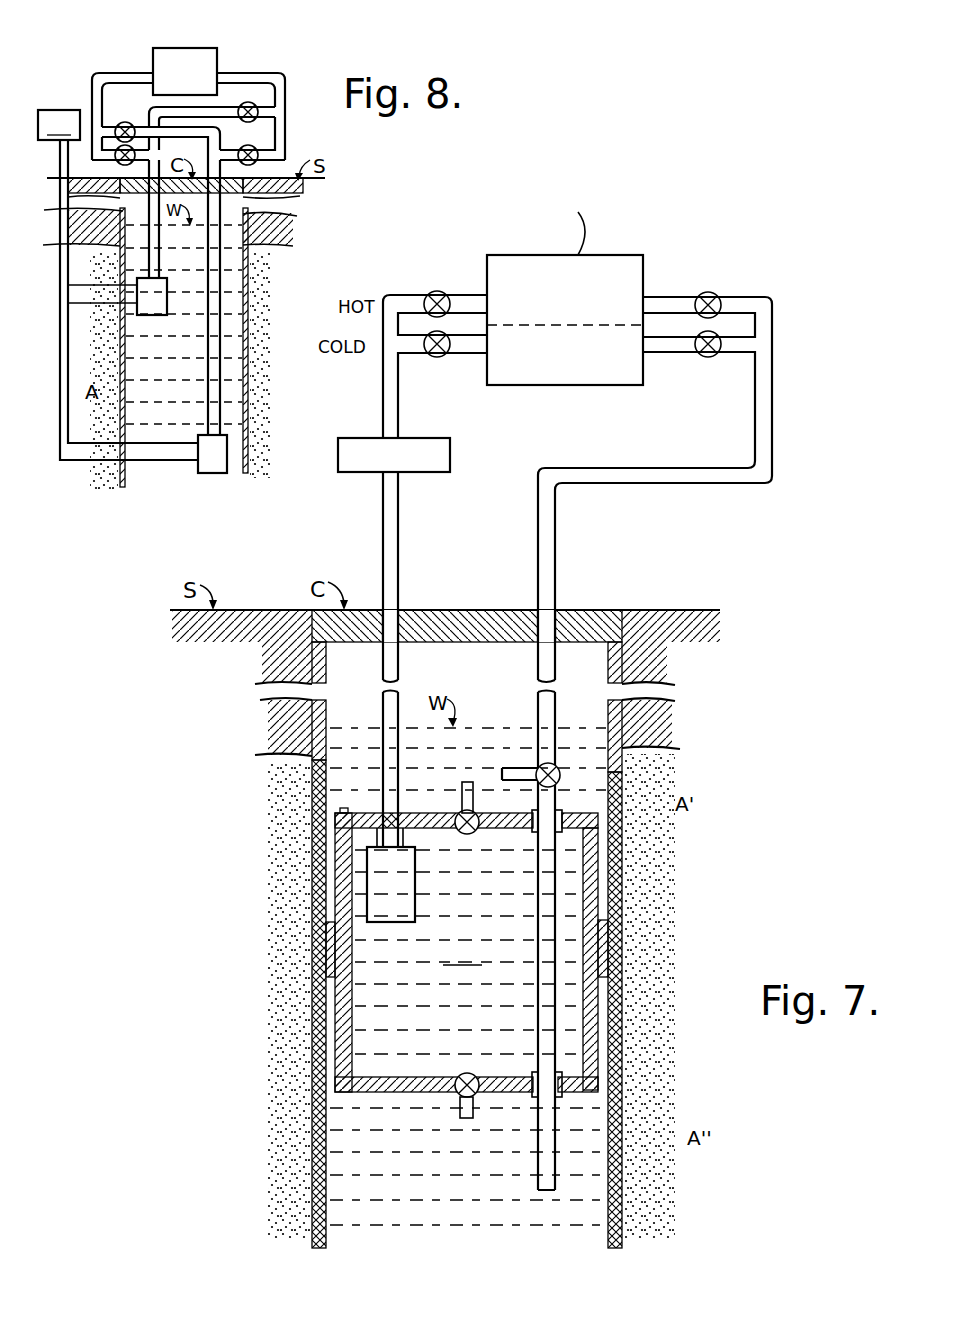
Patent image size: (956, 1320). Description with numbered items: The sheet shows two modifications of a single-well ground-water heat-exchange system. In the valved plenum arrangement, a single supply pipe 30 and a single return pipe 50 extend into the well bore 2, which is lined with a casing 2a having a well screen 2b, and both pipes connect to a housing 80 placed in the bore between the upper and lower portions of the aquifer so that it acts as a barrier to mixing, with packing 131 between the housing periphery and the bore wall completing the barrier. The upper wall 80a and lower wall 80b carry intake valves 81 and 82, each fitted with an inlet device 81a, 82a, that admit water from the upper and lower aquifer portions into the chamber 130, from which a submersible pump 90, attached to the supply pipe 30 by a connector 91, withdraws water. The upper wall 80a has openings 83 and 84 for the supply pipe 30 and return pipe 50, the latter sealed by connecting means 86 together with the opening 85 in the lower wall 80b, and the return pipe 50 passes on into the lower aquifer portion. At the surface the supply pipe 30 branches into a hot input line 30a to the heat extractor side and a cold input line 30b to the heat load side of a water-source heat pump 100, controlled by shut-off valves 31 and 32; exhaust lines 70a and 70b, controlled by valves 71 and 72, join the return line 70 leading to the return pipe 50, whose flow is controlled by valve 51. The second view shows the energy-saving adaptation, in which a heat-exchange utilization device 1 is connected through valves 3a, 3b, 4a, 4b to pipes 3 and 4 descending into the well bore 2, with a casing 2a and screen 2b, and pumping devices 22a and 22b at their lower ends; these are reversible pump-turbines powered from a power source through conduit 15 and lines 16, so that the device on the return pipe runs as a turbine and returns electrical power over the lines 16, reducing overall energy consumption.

In FIG. 8, the heat-exchange utilization device 1 is at (202, 66).
In FIG. 8, the well bore 2 is at (258, 272).
In FIG. 7, the well bore 2 is at (412, 945).
In FIG. 8, the casing 2a is at (176, 227).
In FIG. 7, the casing 2a is at (326, 660).
In FIG. 8, the well screen 2b is at (125, 408).
In FIG. 7, the well screen 2b is at (312, 1220).
In FIG. 8, the pipe 3 is at (160, 255).
In FIG. 8, the valve 3a is at (118, 161).
In FIG. 8, the valve 3b is at (249, 102).
In FIG. 8, the pipe 4 is at (208, 355).
In FIG. 8, the valve 4a is at (128, 121).
In FIG. 8, the valve 4b is at (257, 138).
In FIG. 8, the conduit 15 is at (61, 381).
In FIG. 8, the lines 16 is at (88, 288).
In FIG. 8, the pumping device 22a is at (147, 316).
In FIG. 8, the pumping device 22b is at (212, 474).
In FIG. 7, the supply pipe 30 is at (404, 551).
In FIG. 7, the input line 30a is at (406, 294).
In FIG. 7, the input line 30b is at (410, 354).
In FIG. 7, the shut-off valve 31 is at (434, 290).
In FIG. 7, the shut-off valve 32 is at (437, 358).
In FIG. 7, the return pipe 50 is at (538, 517).
In FIG. 7, the valve 51 is at (544, 762).
In FIG. 7, the return line 70 is at (691, 372).
In FIG. 7, the exhaust line 70a is at (738, 296).
In FIG. 7, the exhaust line 70b is at (736, 349).
In FIG. 7, the valve 71 is at (708, 291).
In FIG. 7, the valve 72 is at (708, 358).
In FIG. 7, the housing 80 is at (474, 971).
In FIG. 7, the upper wall 80a is at (447, 812).
In FIG. 7, the lower wall 80b is at (403, 1073).
In FIG. 7, the intake valve 81 is at (463, 834).
In FIG. 7, the inlet device 81a is at (469, 781).
In FIG. 7, the intake valve 82 is at (465, 1074).
In FIG. 7, the inlet device 82a is at (465, 1119).
In FIG. 7, the opening 83 is at (383, 812).
In FIG. 7, the opening 84 is at (530, 831).
In FIG. 7, the opening 85 is at (574, 1068).
In FIG. 7, the connecting means 86 is at (560, 842).
In FIG. 7, the submersible pump 90 is at (415, 898).
In FIG. 7, the connector 91 is at (338, 830).
In FIG. 7, the water-source heat pump 100 is at (559, 391).
In FIG. 7, the chamber 130 is at (463, 952).
In FIG. 7, the packing 131 is at (313, 957).